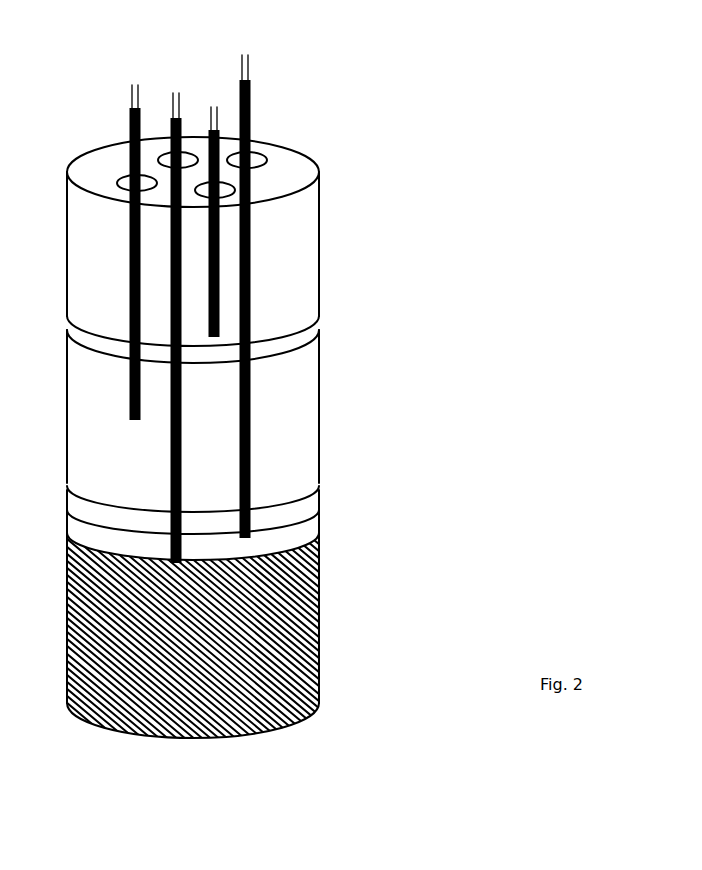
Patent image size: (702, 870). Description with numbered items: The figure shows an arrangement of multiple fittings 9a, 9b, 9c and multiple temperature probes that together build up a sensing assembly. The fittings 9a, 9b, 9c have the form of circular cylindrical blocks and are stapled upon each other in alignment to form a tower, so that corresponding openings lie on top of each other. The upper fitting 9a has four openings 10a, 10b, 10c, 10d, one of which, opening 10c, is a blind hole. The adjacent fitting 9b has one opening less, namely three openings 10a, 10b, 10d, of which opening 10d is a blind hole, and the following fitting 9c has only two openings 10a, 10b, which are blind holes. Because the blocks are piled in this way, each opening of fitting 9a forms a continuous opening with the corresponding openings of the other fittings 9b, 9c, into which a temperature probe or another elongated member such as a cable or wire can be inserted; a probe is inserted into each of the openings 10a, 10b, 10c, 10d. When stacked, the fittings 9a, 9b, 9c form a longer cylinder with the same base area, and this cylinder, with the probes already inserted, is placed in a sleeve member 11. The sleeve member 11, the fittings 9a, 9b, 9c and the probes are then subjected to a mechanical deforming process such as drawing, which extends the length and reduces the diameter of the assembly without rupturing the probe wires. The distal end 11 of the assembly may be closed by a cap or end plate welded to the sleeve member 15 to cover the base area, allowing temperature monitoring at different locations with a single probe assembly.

The fitting 9a is at (295, 240).
The fitting 9b is at (287, 433).
The fitting 9c is at (287, 573).
The opening 10a is at (183, 159).
The opening 10b is at (253, 163).
The opening 10c is at (227, 192).
The opening 10d is at (112, 185).
The sleeve member 11 is at (187, 742).
The sleeve member 15 is at (305, 668).